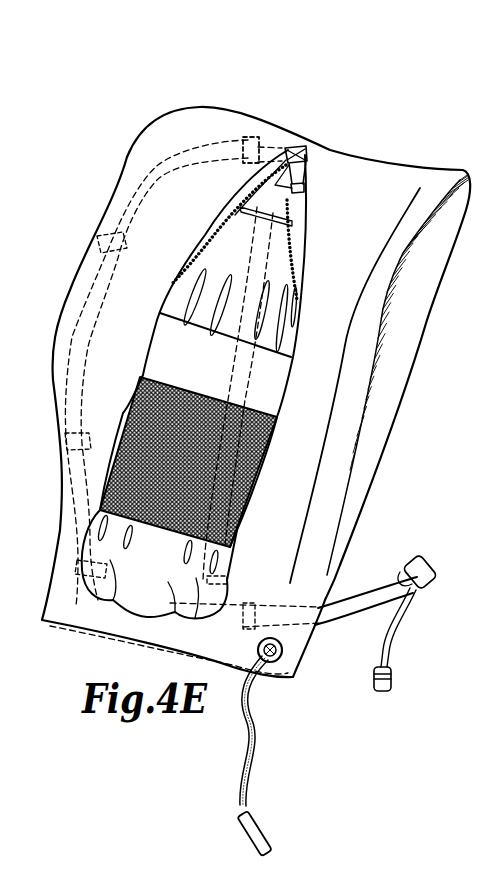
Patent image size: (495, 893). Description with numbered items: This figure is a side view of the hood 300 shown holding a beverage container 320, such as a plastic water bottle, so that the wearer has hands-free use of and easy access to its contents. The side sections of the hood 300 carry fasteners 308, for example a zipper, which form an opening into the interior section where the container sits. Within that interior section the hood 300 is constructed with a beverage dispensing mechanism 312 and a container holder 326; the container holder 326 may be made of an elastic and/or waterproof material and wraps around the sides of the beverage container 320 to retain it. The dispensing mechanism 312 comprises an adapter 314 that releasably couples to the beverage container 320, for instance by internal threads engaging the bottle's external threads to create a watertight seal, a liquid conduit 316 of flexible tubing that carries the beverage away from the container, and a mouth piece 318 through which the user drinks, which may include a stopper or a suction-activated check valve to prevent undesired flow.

The hood 300 is at (180, 102).
The fasteners 308 is at (297, 177).
The beverage dispensing mechanism 312 is at (146, 172).
The adapter 314 is at (277, 206).
The liquid conduit 316 is at (273, 143).
The mouth piece 318 is at (430, 580).
The beverage container 320 is at (200, 302).
The container holders 326 is at (123, 410).